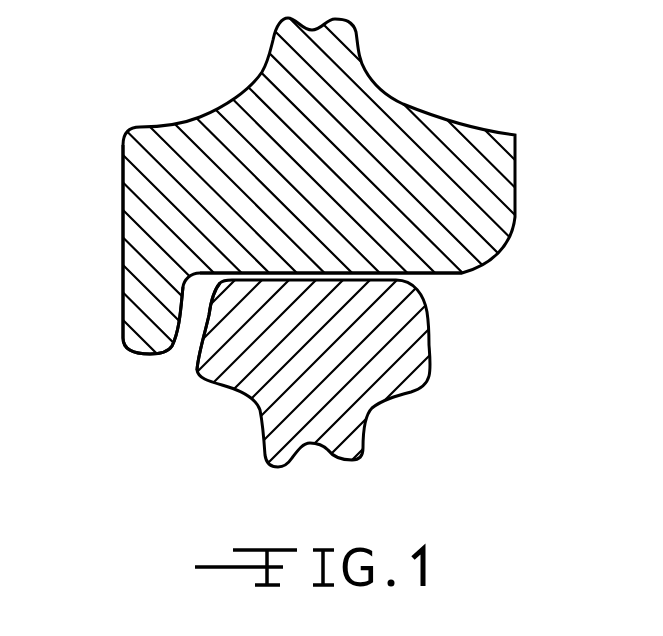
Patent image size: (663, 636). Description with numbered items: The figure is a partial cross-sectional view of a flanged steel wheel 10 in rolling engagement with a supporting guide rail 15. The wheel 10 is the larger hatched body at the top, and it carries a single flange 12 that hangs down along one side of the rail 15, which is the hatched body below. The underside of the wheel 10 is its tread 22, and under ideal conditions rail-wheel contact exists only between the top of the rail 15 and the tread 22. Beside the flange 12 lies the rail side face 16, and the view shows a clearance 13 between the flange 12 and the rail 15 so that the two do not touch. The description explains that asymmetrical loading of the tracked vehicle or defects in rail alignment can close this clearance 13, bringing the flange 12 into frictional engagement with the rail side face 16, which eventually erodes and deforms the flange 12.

The steel wheel 10 is at (518, 190).
The flange 12 is at (123, 278).
The clearance 13 is at (187, 327).
The guide rail 15 is at (431, 361).
The rail side face 16 is at (207, 330).
The tread 22 is at (225, 273).